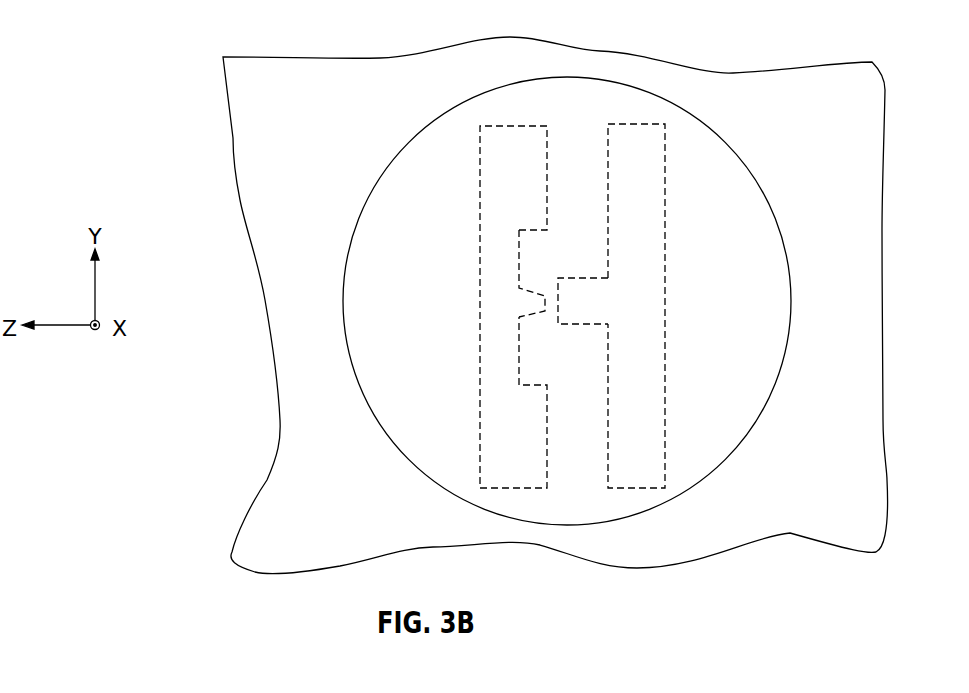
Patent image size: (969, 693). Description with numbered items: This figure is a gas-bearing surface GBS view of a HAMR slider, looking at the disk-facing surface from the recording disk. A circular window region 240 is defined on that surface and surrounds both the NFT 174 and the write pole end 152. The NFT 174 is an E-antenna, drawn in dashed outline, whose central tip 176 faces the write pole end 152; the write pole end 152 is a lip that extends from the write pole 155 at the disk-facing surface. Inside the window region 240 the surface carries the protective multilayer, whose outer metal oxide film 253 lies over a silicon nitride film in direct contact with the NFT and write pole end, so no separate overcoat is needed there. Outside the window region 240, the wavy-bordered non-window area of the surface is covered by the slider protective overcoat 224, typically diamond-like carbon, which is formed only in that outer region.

The slider protective overcoat 224 is at (252, 107).
The gas-bearing surface GBS is at (252, 203).
The window region 240 is at (718, 138).
The metal oxide film 253 is at (607, 102).
The NFT 174 is at (490, 215).
The central tip 176 is at (543, 302).
The write pole 155 is at (638, 202).
The write pole end 152 is at (568, 303).